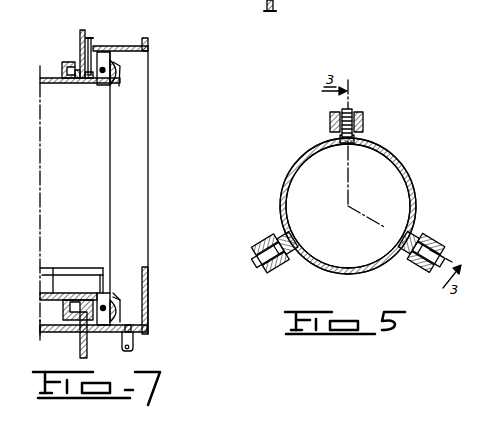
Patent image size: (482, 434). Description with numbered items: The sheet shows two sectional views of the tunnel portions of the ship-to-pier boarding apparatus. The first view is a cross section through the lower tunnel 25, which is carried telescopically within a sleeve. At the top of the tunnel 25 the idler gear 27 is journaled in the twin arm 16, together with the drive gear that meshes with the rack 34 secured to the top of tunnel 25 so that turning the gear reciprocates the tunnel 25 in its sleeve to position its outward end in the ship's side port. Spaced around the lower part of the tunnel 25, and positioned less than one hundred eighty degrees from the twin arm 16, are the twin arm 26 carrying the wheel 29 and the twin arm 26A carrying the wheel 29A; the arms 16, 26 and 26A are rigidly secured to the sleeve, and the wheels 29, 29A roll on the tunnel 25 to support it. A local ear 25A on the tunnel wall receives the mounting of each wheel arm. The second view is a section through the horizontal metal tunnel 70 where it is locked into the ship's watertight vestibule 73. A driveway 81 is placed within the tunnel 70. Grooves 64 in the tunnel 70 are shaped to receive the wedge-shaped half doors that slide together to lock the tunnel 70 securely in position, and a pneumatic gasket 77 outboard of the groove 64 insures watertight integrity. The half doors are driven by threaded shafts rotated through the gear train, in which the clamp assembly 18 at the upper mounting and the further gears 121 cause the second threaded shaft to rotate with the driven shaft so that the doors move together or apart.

In FIG. 7, the horizontal metal tunnel 70 is at (56, 69).
In FIG. 7, the pneumatic gasket 77 is at (79, 80).
In FIG. 7, the clamp assembly 18 is at (111, 84).
In FIG. 7, the driveway 81 is at (62, 267).
In FIG. 7, the groove 64 is at (112, 297).
In FIG. 7, the gears 121 is at (120, 313).
In FIG. 7, the ship's watertight vestibule 73 is at (146, 335).
In FIG. 5, the lower tunnel portion 25 is at (405, 167).
In FIG. 5, the ring ear 25A is at (280, 232).
In FIG. 5, the twin arm 26 is at (270, 238).
In FIG. 5, the twin arm 26A is at (430, 233).
In FIG. 5, the idler gear 27 is at (355, 114).
In FIG. 5, the wheel 29 is at (278, 249).
In FIG. 5, the wheel 29A is at (429, 250).
In FIG. 5, the twin arm 16 is at (330, 121).
In FIG. 5, the rack 34 is at (357, 138).